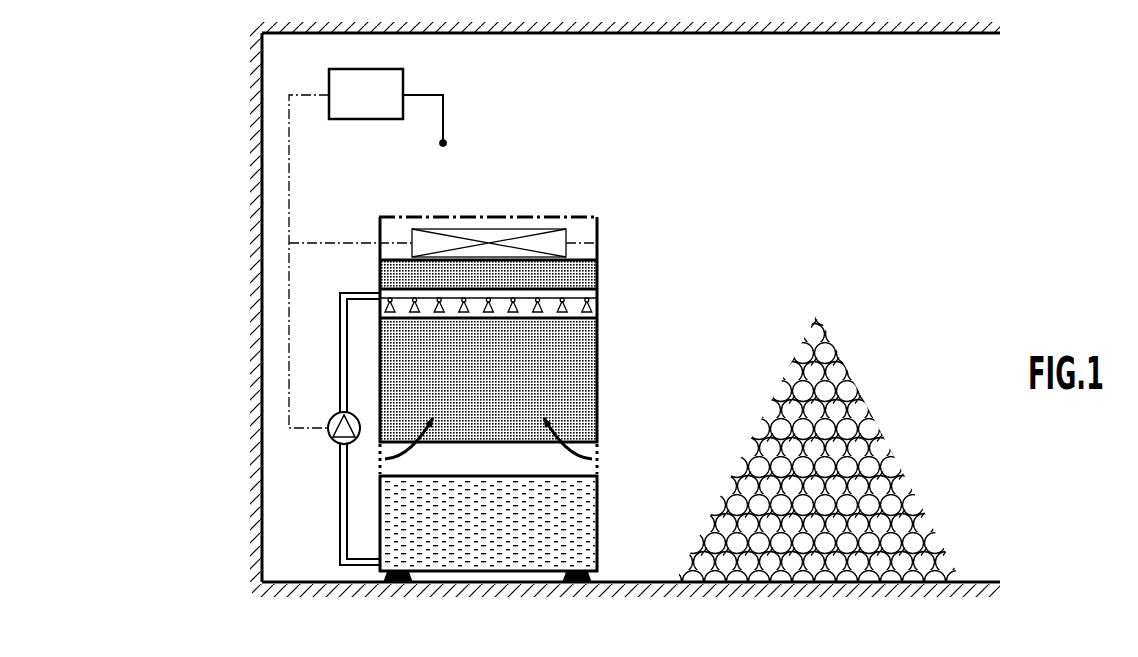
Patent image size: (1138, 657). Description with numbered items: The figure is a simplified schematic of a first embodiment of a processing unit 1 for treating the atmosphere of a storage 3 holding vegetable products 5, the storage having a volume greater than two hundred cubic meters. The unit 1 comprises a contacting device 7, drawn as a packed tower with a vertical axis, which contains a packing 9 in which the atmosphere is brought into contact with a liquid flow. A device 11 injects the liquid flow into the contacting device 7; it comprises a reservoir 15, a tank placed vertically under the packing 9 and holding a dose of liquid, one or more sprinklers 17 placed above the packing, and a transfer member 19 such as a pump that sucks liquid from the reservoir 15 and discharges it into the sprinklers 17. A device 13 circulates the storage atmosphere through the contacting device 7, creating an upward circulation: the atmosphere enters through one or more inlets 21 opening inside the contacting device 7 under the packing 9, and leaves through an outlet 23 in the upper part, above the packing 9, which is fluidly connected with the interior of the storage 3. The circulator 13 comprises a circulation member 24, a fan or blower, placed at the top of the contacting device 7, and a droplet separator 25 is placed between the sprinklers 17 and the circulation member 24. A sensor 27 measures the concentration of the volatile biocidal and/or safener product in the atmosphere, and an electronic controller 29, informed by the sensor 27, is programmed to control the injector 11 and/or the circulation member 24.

The processing unit 1 is at (640, 205).
The storage 3 is at (841, 35).
The vegetable products 5 is at (912, 452).
The contacting device 7 is at (636, 330).
The packing 9 is at (600, 370).
The injector 11 is at (324, 412).
The circulator 13 is at (566, 207).
The reservoir 15 is at (600, 516).
The sprinklers 17 is at (378, 284).
The transfer member 19 is at (331, 413).
The inlets 21 is at (600, 450).
The outlet 23 is at (427, 213).
The circulation member 24 is at (600, 246).
The droplet separator 25 is at (600, 282).
The sensor 27 is at (448, 143).
The electronic controller 29 is at (350, 248).